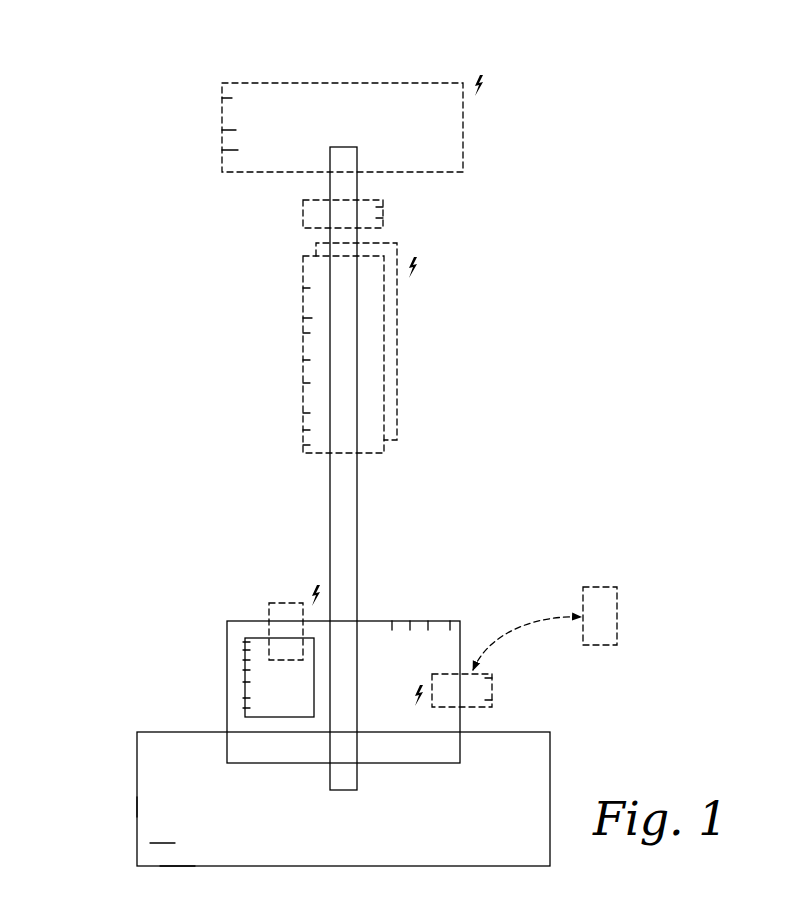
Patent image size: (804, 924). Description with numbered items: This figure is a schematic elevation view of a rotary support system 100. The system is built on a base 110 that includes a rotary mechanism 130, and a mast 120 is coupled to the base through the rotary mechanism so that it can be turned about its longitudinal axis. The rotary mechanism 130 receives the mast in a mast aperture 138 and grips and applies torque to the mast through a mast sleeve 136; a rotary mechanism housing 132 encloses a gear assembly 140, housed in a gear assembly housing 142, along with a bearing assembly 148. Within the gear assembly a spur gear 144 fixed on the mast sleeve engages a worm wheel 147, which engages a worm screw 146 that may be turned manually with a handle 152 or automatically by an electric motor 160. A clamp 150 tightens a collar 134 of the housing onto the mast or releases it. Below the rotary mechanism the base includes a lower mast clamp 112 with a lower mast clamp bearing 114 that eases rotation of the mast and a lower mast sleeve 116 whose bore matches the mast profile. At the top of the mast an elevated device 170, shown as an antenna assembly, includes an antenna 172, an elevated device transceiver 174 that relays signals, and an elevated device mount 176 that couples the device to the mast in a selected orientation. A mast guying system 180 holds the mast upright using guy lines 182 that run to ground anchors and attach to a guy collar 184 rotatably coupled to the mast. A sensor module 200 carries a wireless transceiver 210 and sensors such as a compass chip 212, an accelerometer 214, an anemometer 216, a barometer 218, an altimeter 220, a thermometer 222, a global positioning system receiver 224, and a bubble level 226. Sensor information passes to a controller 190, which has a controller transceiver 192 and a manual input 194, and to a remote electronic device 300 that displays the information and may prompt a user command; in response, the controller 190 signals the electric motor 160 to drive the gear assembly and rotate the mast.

The rotary support system 100 is at (193, 45).
The base 110 is at (134, 771).
The lower mast clamp 112 is at (137, 807).
The lower mast clamp bearing 114 is at (162, 843).
The lower mast sleeve 116 is at (176, 850).
The mast 120 is at (357, 484).
The rotary mechanism 130 is at (373, 616).
The rotary mechanism housing 132 is at (392, 630).
The collar 134 is at (410, 630).
The mast sleeve 136 is at (428, 630).
The mast aperture 138 is at (450, 630).
The gear assembly 140 is at (255, 638).
The gear assembly housing 142 is at (243, 642).
The spur gear 144 is at (243, 650).
The worm screw 146 is at (243, 660).
The worm wheel 147 is at (243, 670).
The bearing assembly 148 is at (243, 682).
The clamp 150 is at (243, 698).
The handle 152 is at (243, 708).
The electric motor 160 is at (287, 603).
The elevated device 170 is at (349, 78).
The antenna 172 is at (233, 98).
The elevated device transceiver 174 is at (237, 130).
The elevated device mount 176 is at (238, 150).
The mast guying system 180 is at (301, 217).
The guy lines 182 is at (383, 207).
The guy collar 184 is at (383, 218).
The controller 190 is at (489, 670).
The controller transceiver 192 is at (492, 678).
The manual input 194 is at (492, 700).
The sensor module 200 is at (323, 243).
The wireless transceiver 210 is at (312, 283).
The compass chip 212 is at (303, 288).
The accelerometer 214 is at (312, 314).
The anemometer 216 is at (308, 333).
The barometer 218 is at (308, 360).
The altimeter 220 is at (308, 383).
The thermometer 222 is at (310, 413).
The global positioning system receiver 224 is at (308, 430).
The bubble level 226 is at (307, 443).
The remote electronic device 300 is at (605, 587).